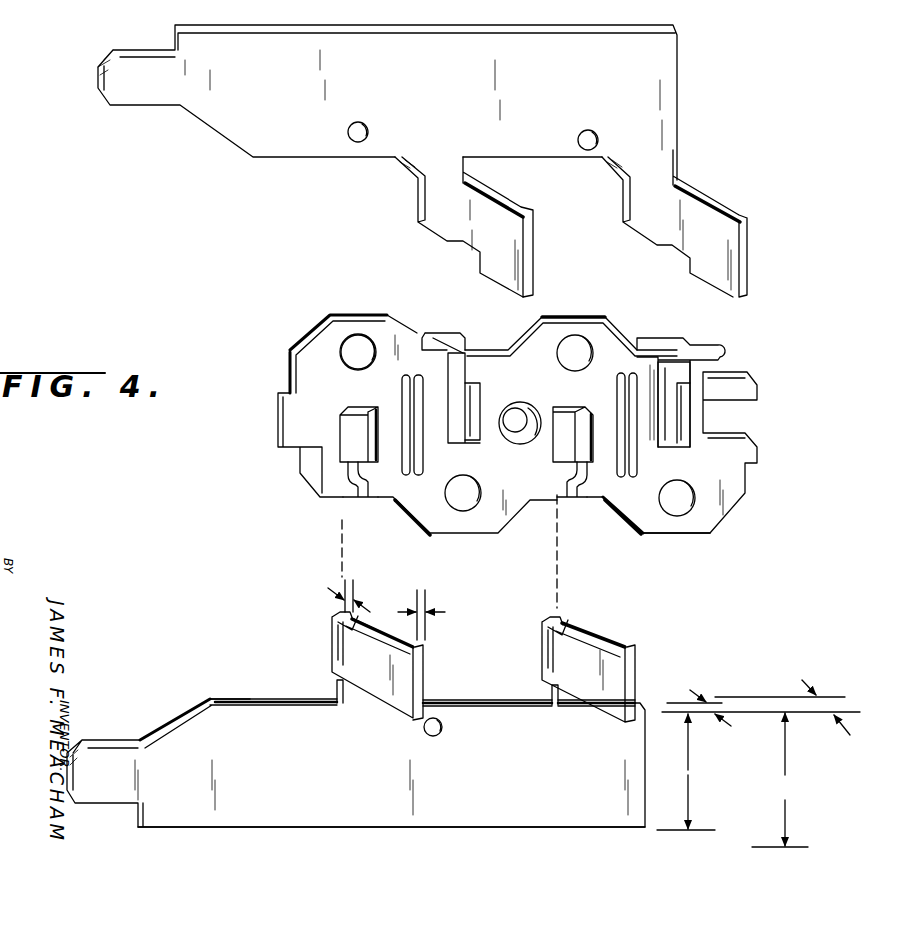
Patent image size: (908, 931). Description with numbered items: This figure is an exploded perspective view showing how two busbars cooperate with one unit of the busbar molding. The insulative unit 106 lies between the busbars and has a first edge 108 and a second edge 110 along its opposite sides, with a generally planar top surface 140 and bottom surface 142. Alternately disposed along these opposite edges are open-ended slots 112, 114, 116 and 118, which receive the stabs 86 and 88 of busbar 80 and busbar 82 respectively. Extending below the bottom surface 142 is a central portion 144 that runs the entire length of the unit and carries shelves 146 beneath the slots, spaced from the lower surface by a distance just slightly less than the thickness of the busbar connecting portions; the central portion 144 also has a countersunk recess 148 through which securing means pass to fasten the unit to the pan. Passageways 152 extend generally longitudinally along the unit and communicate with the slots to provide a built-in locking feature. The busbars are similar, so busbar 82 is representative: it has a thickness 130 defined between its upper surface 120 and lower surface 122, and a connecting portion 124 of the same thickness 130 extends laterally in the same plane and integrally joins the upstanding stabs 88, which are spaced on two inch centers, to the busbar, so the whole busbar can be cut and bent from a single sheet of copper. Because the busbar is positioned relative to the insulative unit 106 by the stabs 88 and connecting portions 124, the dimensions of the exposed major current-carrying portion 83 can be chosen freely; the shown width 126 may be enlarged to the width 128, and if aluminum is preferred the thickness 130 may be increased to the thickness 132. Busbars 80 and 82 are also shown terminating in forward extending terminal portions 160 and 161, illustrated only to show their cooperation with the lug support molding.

The busbar 80 is at (446, 93).
The forward extending terminal portion 160 is at (131, 97).
The connecting portion 124 is at (433, 190).
The stab 86 is at (537, 255).
The insulative unit 106 is at (303, 336).
The first edge 108 is at (567, 317).
The open-ended slot 112 is at (662, 363).
The open-ended slot 116 is at (452, 362).
The central portion 144 is at (457, 336).
The passageway 152 is at (470, 383).
The bottom surface 142 is at (289, 366).
The top surface 140 is at (347, 396).
The shelf 146 is at (353, 432).
The countersunk recess 148 is at (528, 410).
The open-ended slot 118 is at (347, 500).
The open-ended slot 114 is at (560, 500).
The second edge 110 is at (665, 537).
The thickness 130 is at (574, 660).
The stab 88 is at (425, 673).
The lower surface 122 is at (246, 697).
The forward extending terminal portion 161 is at (110, 755).
The upper surface 120 is at (338, 775).
The busbar 82 is at (572, 785).
The exposed major current-carrying portion 83 is at (412, 829).
The width 126 is at (686, 772).
The enlarged width 128 is at (780, 780).
The increased thickness 132 is at (795, 719).